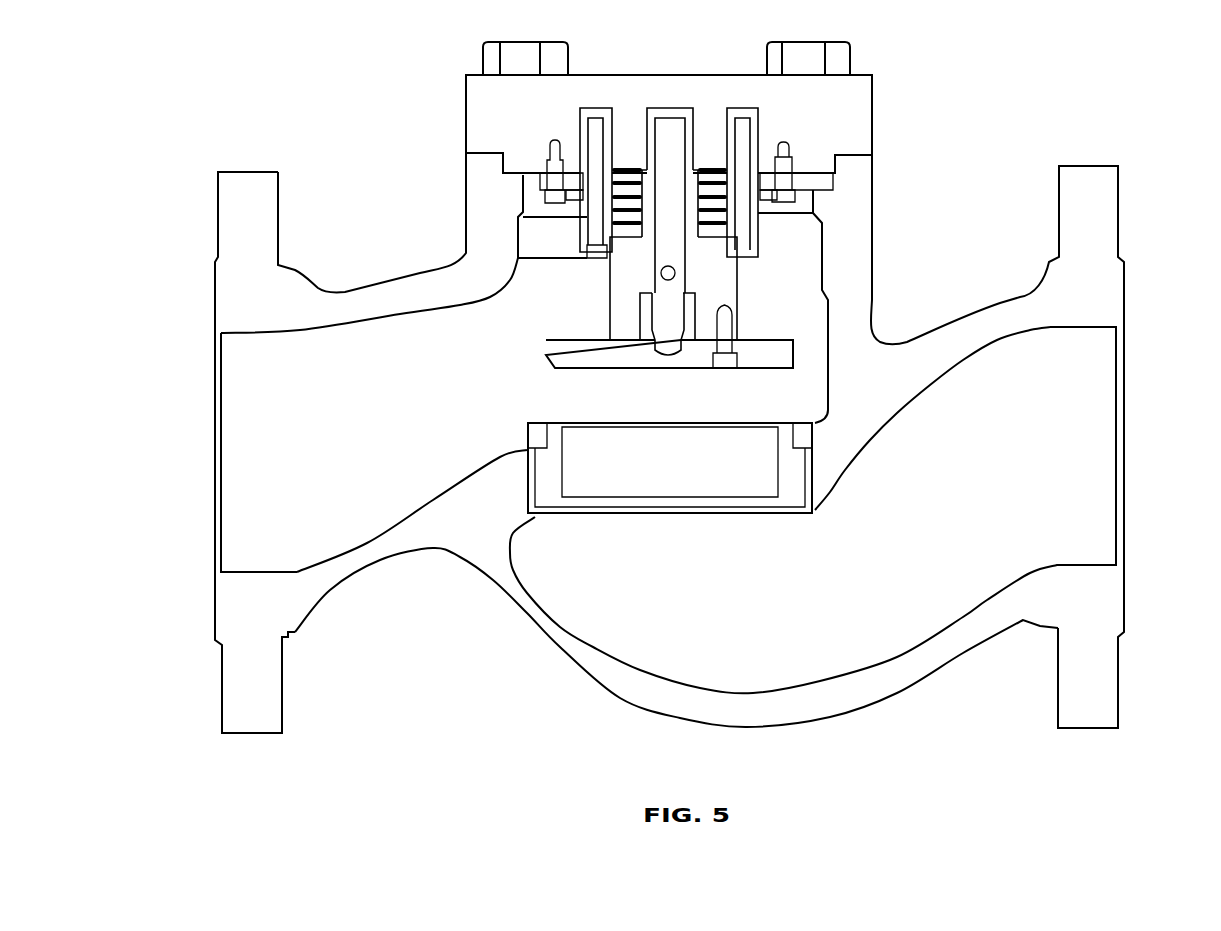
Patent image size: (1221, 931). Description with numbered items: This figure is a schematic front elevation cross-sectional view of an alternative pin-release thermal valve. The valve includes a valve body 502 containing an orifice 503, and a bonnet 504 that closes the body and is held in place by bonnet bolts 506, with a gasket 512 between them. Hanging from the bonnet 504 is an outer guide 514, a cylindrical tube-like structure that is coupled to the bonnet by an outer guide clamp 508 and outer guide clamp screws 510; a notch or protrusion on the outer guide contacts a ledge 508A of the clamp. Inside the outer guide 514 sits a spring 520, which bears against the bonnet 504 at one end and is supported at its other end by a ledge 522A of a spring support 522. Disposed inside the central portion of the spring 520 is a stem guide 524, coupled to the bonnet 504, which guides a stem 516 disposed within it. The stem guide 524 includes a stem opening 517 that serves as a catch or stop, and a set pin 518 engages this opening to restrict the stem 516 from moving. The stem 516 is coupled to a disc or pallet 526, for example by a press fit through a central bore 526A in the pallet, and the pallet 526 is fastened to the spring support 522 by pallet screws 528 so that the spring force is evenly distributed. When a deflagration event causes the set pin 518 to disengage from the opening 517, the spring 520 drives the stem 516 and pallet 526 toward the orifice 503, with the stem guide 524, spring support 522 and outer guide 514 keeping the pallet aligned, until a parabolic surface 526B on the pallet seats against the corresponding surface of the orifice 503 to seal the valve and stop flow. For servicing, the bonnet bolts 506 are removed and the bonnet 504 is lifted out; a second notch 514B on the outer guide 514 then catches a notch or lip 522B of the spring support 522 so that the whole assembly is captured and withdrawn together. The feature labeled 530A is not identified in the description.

The valve body 502 is at (1088, 166).
The orifice 503 is at (620, 480).
The bonnet 504 is at (858, 104).
The bonnet bolts 506 is at (528, 41).
The outer guide clamp 508 is at (792, 182).
The ledge 508A is at (578, 167).
The outer guide clamp screws 510 is at (793, 197).
The gasket 512 is at (500, 177).
The outer guide 514 is at (523, 212).
The second notch 514B is at (587, 253).
The stem 516 is at (665, 313).
The stem opening 517 is at (648, 268).
The set pin 518 is at (676, 272).
The spring 520 is at (707, 170).
The spring support 522 is at (618, 295).
The ledge 522A is at (740, 232).
The notch or lip 522B is at (600, 127).
The stem guide 524 is at (625, 295).
The disc or pallet 526 is at (793, 350).
The central bore 526A is at (830, 403).
The parabolic surface 526B is at (735, 357).
The pallet screws 528 is at (755, 342).
The flow passage wall 530A is at (587, 424).